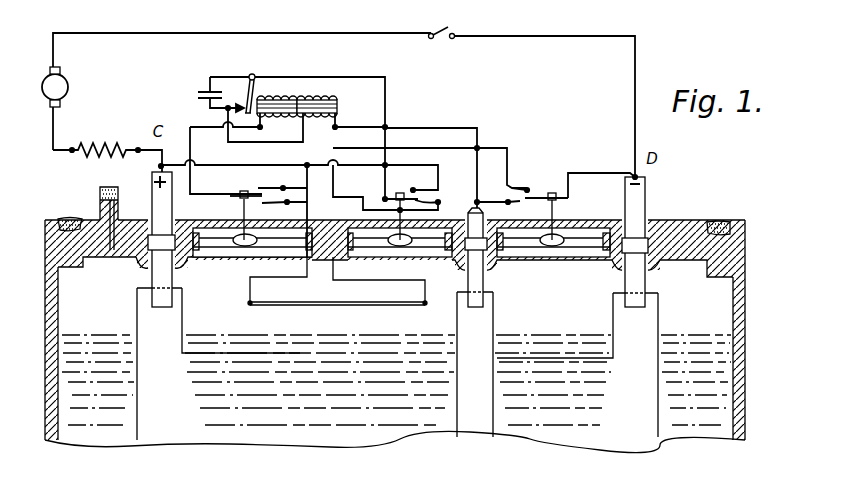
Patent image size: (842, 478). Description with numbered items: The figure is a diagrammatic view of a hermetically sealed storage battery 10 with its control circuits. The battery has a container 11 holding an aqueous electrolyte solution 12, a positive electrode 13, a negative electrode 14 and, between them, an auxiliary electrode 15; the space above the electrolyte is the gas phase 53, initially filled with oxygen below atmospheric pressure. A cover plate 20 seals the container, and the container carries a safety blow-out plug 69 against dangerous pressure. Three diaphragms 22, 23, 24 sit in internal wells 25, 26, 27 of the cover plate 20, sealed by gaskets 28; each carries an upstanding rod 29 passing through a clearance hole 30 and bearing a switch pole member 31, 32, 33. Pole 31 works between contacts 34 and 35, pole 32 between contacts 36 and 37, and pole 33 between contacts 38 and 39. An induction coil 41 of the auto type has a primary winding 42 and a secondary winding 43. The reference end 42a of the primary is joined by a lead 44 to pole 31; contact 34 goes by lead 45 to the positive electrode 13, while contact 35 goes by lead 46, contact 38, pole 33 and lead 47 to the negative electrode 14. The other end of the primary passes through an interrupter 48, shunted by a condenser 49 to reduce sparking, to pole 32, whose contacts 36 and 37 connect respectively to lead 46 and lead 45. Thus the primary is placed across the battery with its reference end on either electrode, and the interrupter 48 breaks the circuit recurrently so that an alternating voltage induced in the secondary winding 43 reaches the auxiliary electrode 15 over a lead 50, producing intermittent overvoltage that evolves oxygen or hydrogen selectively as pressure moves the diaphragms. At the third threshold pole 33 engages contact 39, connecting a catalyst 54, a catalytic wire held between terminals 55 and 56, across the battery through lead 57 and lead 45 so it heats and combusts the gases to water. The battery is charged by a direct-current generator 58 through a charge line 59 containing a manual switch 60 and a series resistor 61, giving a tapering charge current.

The storage battery 10 is at (729, 201).
The container 11 is at (740, 360).
The aqueous electrolyte solution 12 is at (550, 443).
The positive electrode 13 is at (137, 312).
The negative electrode 14 is at (660, 316).
The auxiliary electrode 15 is at (493, 318).
The cover plate 20 is at (688, 262).
The diaphragm 22 is at (230, 247).
The diaphragm 23 is at (380, 247).
The diaphragm 24 is at (520, 245).
The internal well 25 is at (232, 228).
The internal well 26 is at (433, 233).
The internal well 27 is at (600, 228).
The gasket 28 is at (205, 255).
The upstanding rod 29 is at (244, 190).
The clearance hole 30 is at (240, 236).
The switch pole member 31 is at (240, 192).
The switch pole member 32 is at (385, 194).
The switch pole member 33 is at (535, 196).
The semistationary contact 34 is at (284, 204).
The semistationary contact 35 is at (270, 188).
The semistationary contact 36 is at (425, 200).
The semistationary contact 37 is at (414, 189).
The semistationary contact 38 is at (507, 200).
The semistationary contact 39 is at (513, 186).
The induction coil 41 is at (298, 108).
The primary winding 42 is at (270, 100).
The reference end 42a is at (265, 128).
The secondary winding 43 is at (320, 100).
The lead 44 is at (190, 128).
The lead 45 is at (228, 164).
The lead 46 is at (337, 196).
The lead 47 is at (601, 172).
The interrupter 48 is at (245, 90).
The condenser 49 is at (198, 94).
The lead 50 is at (453, 128).
The gas phase 53 is at (560, 299).
The catalyst 54 is at (300, 304).
The terminal 55 is at (270, 300).
The terminal 56 is at (398, 288).
The lead 57 is at (425, 148).
The direct-current generator 58 is at (68, 88).
The charge line 59 is at (160, 33).
The manual switch 60 is at (442, 32).
The series resistor 61 is at (100, 143).
The safety blow-out plug 69 is at (106, 190).